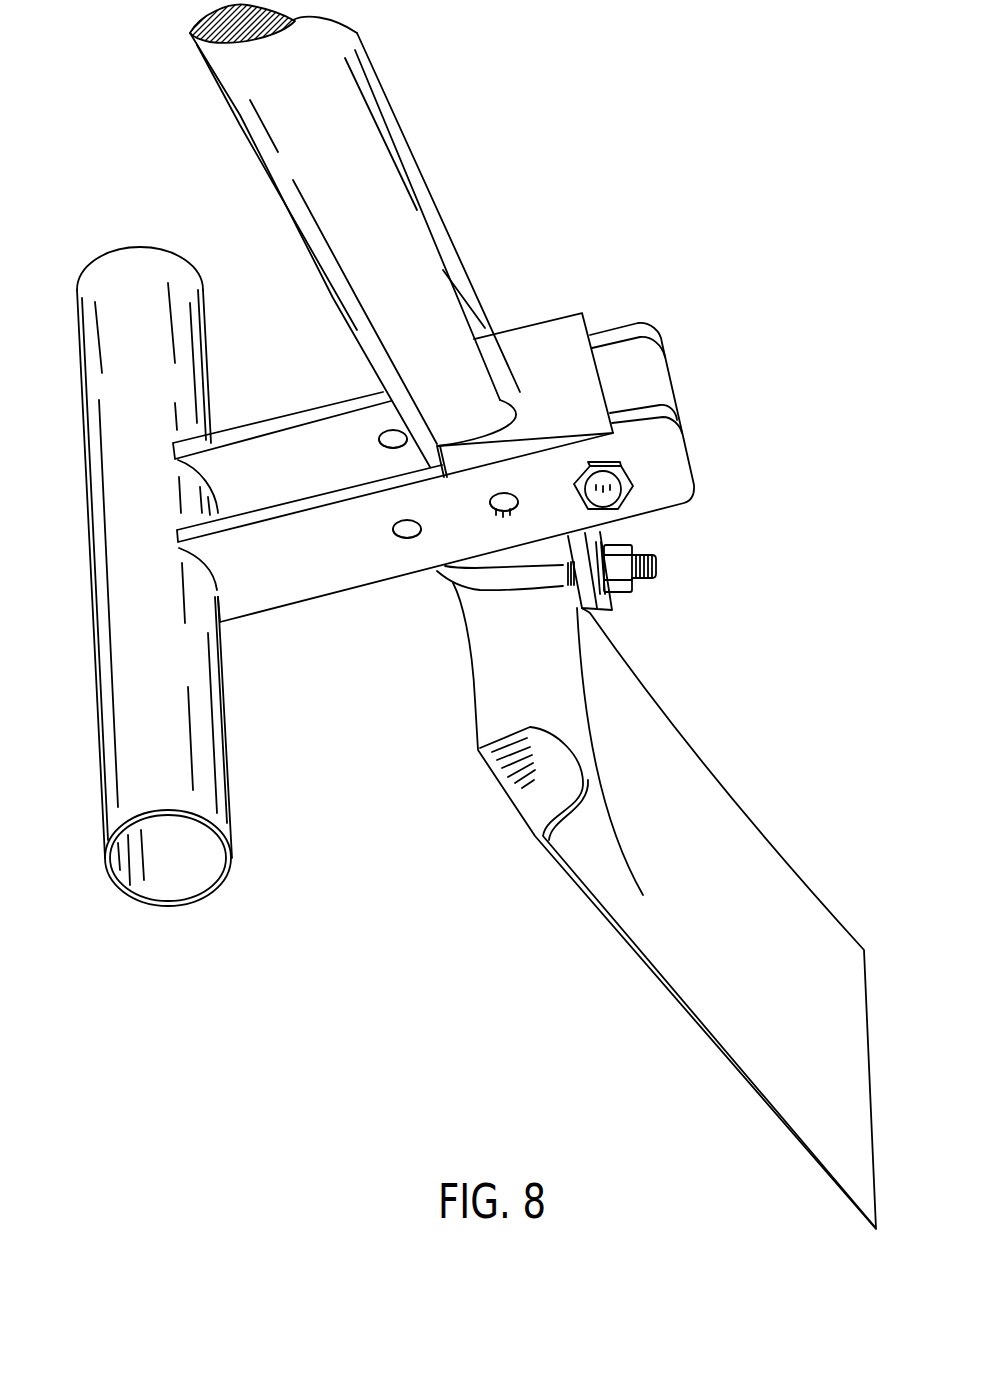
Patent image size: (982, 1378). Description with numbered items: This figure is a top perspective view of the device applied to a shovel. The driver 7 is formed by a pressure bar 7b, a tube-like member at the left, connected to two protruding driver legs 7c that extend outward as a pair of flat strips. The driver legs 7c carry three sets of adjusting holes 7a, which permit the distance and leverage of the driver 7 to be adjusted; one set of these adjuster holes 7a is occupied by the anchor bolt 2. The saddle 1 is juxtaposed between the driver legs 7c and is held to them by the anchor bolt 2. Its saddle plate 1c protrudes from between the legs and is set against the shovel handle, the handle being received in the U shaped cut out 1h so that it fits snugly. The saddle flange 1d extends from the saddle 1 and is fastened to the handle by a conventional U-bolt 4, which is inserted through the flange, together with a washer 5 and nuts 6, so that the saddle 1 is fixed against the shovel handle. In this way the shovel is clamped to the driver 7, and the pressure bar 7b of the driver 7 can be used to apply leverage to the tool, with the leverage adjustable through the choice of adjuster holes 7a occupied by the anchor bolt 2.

The saddle 1 is at (600, 377).
The saddle plate 1c is at (580, 312).
The saddle flange 1d is at (593, 609).
The U shaped cut out 1h is at (530, 392).
The anchor bolt 2 is at (627, 497).
The U-bolt 4 is at (655, 567).
The washer 5 is at (615, 608).
The nuts 6 is at (645, 588).
The driver 7 is at (97, 812).
The adjuster holes 7a is at (408, 543).
The pressure bar 7b is at (227, 695).
The driver legs 7c is at (272, 417).